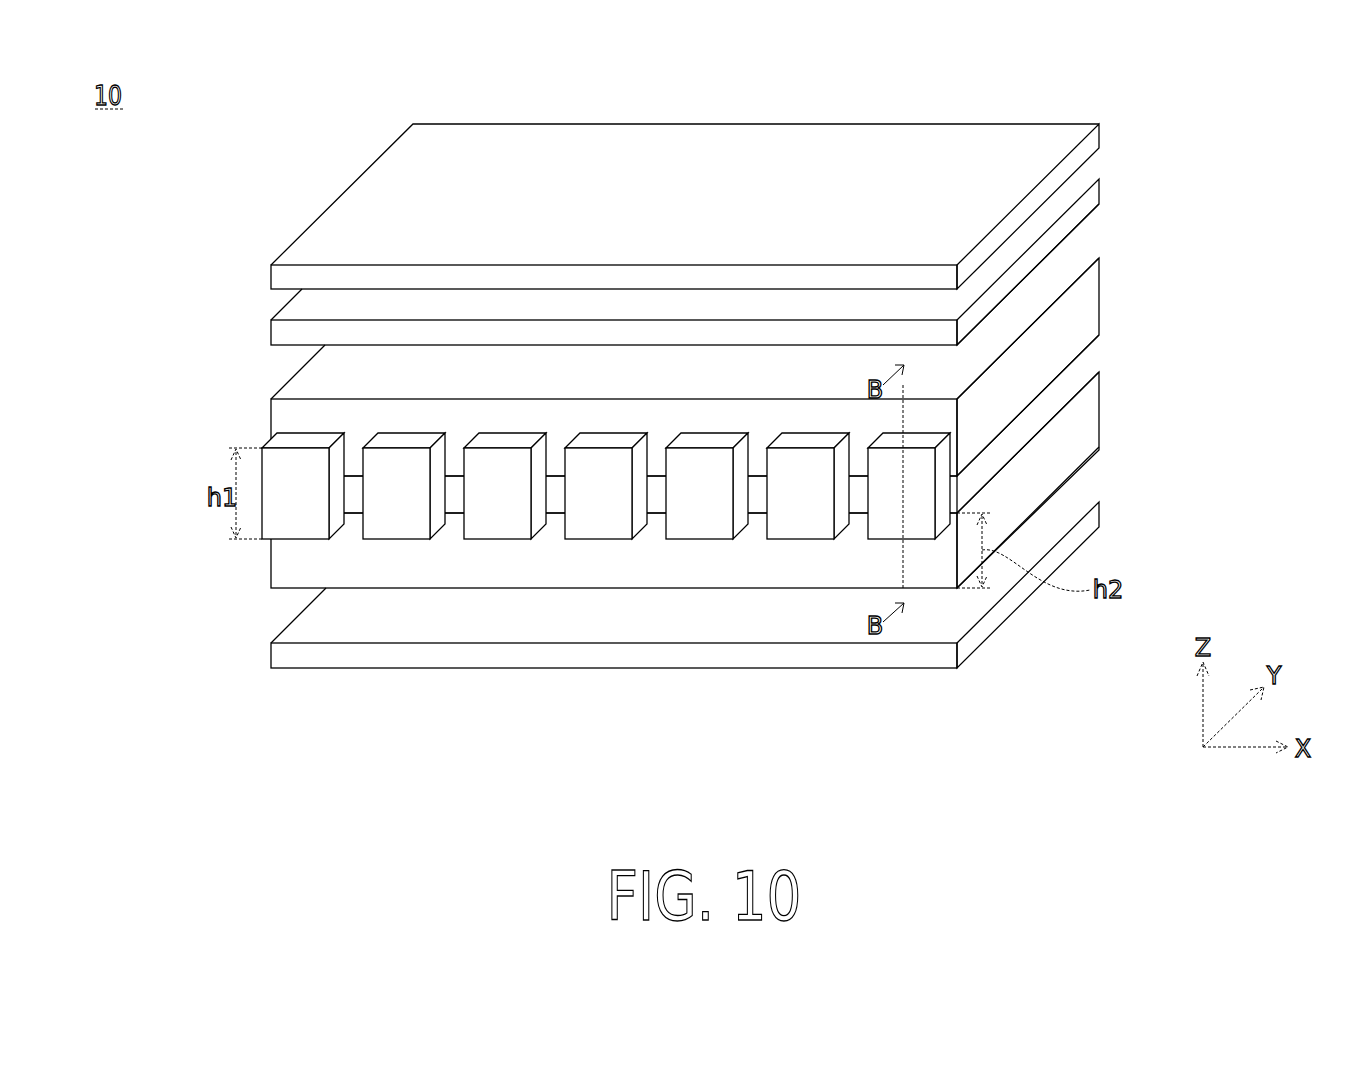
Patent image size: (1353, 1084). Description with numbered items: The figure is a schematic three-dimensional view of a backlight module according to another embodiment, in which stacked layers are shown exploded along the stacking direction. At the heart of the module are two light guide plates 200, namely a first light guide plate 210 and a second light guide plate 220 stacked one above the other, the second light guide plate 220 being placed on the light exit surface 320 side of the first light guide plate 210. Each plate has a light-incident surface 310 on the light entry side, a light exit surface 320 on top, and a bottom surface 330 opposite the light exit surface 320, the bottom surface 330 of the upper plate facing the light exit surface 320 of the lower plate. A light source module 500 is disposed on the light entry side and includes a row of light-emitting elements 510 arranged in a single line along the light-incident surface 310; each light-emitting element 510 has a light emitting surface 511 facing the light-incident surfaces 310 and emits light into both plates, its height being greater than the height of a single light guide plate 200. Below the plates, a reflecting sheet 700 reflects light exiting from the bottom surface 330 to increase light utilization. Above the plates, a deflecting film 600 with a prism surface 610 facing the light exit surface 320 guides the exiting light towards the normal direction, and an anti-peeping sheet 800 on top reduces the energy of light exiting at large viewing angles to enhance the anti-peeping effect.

The anti-peeping sheet 800 is at (1090, 144).
The deflecting film 600 is at (1090, 198).
The prism surface 610 is at (1088, 222).
The light guide plate 200 is at (781, 423).
The second light guide plate 220 is at (1105, 294).
The first light guide plate 210 is at (1105, 411).
The light exit surface 320 is at (1062, 276).
The bottom surface 330 is at (1090, 349).
The light-incident surface 310 is at (860, 423).
The reflecting sheet 700 is at (1000, 612).
The light source module 500 is at (562, 569).
The light-emitting element 510 is at (297, 522).
The light emitting surface 511 is at (350, 502).